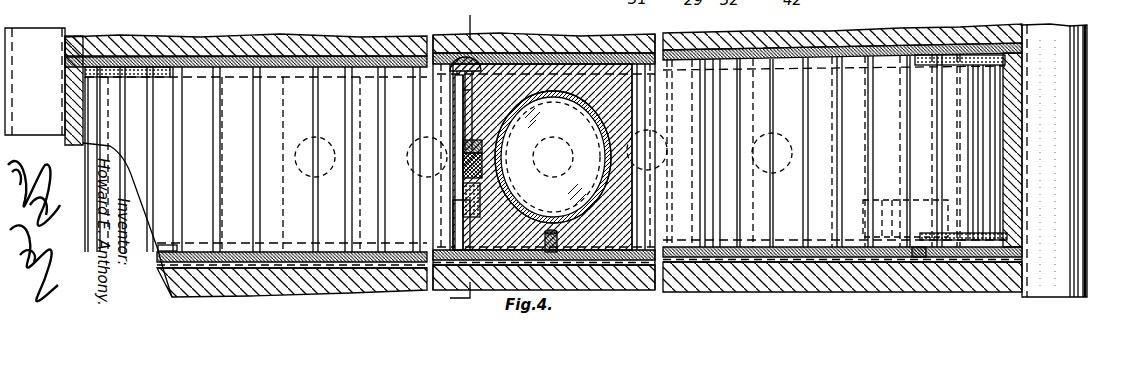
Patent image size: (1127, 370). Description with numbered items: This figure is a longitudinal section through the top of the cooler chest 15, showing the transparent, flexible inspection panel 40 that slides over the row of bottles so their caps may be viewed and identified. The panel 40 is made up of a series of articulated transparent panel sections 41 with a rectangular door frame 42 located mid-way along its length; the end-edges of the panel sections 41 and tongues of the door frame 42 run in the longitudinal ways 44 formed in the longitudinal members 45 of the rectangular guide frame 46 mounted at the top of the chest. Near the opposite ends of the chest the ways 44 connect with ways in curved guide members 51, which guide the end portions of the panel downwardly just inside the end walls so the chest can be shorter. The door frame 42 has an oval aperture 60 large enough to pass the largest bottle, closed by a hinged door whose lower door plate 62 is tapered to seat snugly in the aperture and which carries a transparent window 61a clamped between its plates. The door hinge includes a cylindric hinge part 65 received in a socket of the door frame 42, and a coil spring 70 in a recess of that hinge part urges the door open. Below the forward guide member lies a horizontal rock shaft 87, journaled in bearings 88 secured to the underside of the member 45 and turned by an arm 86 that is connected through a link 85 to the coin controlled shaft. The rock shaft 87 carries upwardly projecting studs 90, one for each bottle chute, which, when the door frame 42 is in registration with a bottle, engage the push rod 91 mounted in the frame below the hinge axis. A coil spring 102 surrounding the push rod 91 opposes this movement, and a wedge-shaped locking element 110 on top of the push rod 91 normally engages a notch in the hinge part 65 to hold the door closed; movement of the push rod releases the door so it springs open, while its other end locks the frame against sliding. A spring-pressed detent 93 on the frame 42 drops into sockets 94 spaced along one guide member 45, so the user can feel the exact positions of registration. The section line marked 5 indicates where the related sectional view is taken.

The cooler chest 15 is at (1090, 60).
The inspection panel 40 is at (265, 90).
The transparent panel sections 41 is at (232, 87).
The door frame 42 is at (603, 88).
The longitudinal ways 44 is at (827, 53).
The longitudinal members 45 is at (845, 52).
The guide frame 46 is at (937, 50).
The guide members 51 is at (138, 73).
The section line 5- 5 is at (468, 19).
The aperture 60 is at (510, 205).
The transparent window 61a is at (555, 113).
The lower door plate 62 is at (549, 112).
The cylindric hinge part 65 is at (490, 147).
The coil spring 70 is at (485, 163).
The link 85 is at (877, 199).
The arm 86 is at (888, 203).
The rock shaft 87 is at (333, 263).
The bearings 88 is at (208, 252).
The studs 90 is at (244, 262).
The push rod 91 is at (478, 120).
The spring-pressed detent 93 is at (551, 233).
The sockets 94 is at (312, 257).
The coil spring 102 is at (497, 185).
The locking element 110 is at (478, 137).